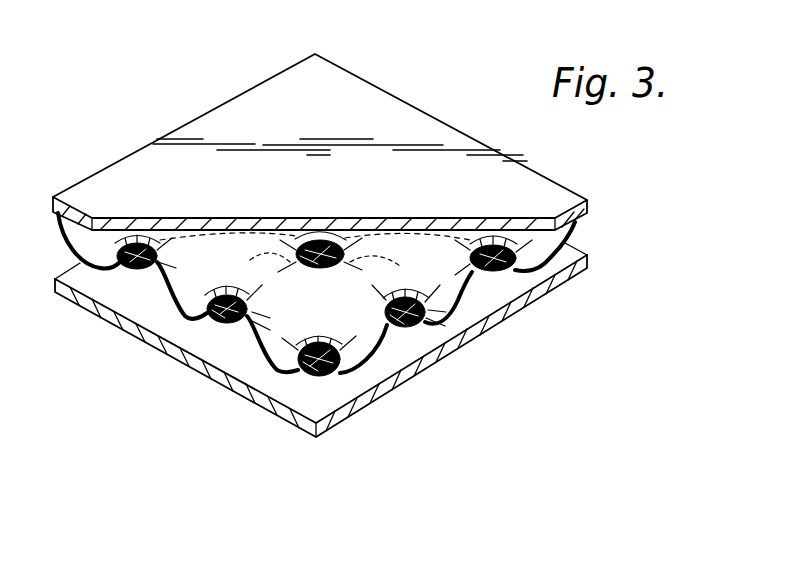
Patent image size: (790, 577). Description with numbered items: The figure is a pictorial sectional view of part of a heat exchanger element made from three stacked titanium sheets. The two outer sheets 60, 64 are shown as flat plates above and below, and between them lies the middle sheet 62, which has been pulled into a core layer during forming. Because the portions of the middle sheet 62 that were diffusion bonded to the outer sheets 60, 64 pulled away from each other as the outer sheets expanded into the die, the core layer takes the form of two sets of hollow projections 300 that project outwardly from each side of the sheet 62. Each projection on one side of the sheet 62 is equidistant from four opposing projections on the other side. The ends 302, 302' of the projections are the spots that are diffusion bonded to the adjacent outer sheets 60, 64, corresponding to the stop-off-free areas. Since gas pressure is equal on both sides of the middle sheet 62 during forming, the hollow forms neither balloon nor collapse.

The outer titanium sheet 60 is at (505, 315).
The middle titanium sheet 62 is at (180, 303).
The outer titanium sheet 64 is at (213, 118).
The hollow projections 300 is at (558, 241).
The ends of the projections 302 is at (317, 348).
The ends of the projections 302' is at (287, 202).